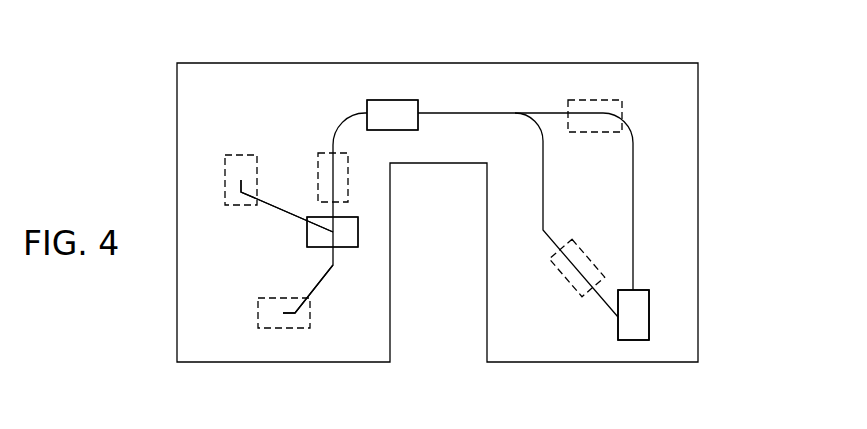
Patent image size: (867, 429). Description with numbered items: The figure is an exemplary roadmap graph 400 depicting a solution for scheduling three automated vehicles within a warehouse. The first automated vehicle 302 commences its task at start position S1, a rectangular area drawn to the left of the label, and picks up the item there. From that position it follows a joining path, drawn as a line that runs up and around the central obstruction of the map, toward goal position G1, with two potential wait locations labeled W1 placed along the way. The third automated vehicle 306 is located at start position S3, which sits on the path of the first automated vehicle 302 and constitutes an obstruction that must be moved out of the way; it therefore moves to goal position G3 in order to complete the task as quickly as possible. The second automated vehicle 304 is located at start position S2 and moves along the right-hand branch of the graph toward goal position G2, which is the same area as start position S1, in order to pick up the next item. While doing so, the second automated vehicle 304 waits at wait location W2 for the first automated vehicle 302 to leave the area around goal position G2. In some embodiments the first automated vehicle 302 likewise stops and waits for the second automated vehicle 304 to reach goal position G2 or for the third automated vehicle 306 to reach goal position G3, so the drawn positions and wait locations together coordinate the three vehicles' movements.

The roadmap graph 400 is at (803, 33).
The first automated vehicle 302 is at (640, 340).
The second automated vehicle 304 is at (390, 100).
The third automated vehicle 306 is at (358, 232).
The start position S1 is at (650, 313).
The start position S2 is at (407, 104).
The start position S3 is at (340, 246).
The goal position G1 is at (293, 296).
The goal position G2 is at (651, 315).
The goal position G3 is at (279, 190).
The wait location W1 is at (488, 139).
The wait location W2 is at (583, 260).